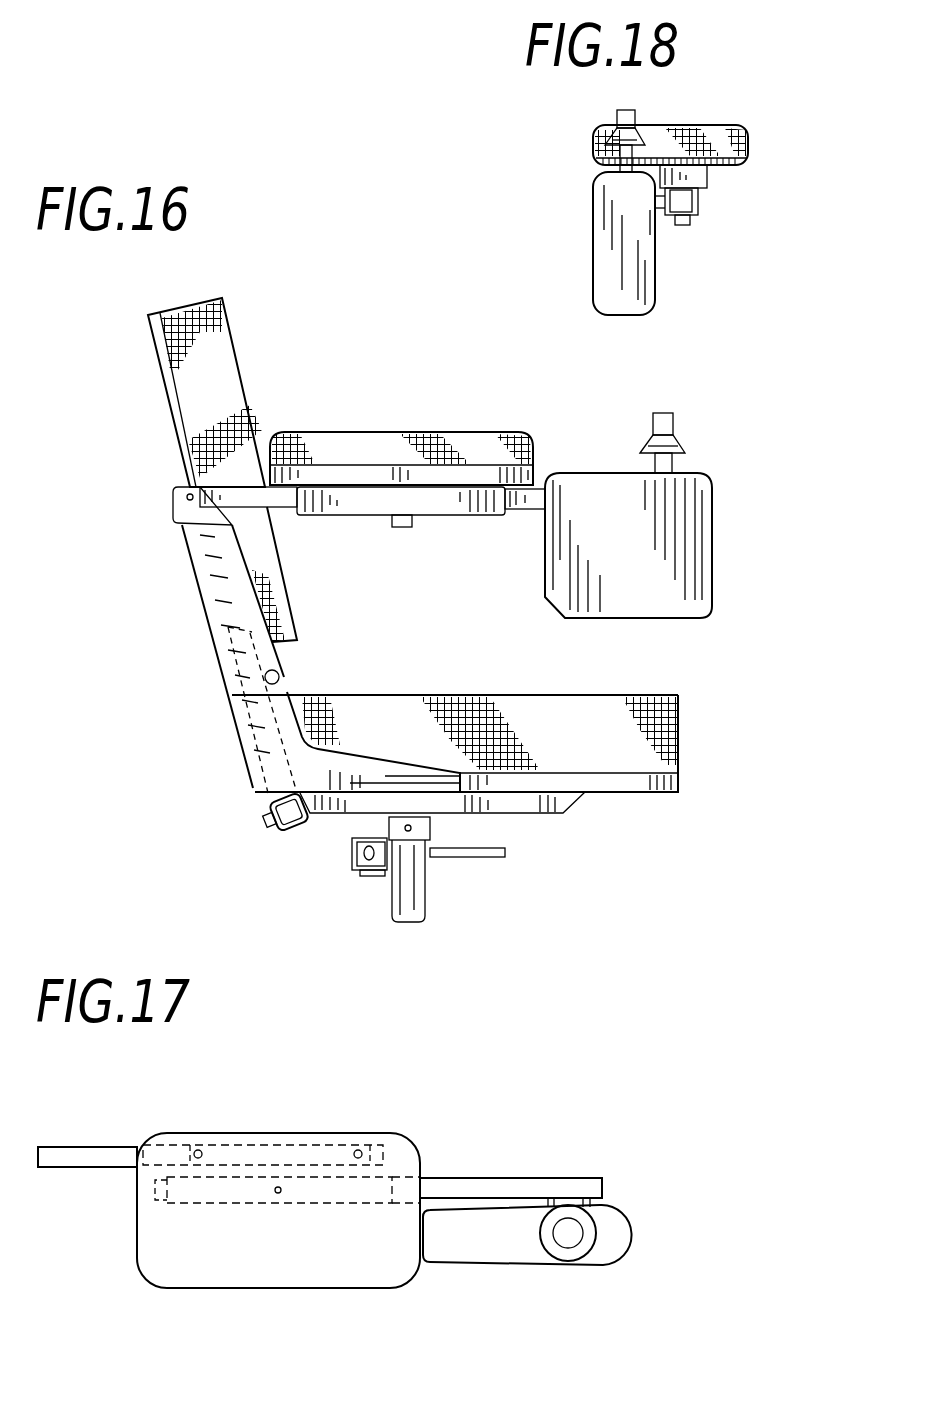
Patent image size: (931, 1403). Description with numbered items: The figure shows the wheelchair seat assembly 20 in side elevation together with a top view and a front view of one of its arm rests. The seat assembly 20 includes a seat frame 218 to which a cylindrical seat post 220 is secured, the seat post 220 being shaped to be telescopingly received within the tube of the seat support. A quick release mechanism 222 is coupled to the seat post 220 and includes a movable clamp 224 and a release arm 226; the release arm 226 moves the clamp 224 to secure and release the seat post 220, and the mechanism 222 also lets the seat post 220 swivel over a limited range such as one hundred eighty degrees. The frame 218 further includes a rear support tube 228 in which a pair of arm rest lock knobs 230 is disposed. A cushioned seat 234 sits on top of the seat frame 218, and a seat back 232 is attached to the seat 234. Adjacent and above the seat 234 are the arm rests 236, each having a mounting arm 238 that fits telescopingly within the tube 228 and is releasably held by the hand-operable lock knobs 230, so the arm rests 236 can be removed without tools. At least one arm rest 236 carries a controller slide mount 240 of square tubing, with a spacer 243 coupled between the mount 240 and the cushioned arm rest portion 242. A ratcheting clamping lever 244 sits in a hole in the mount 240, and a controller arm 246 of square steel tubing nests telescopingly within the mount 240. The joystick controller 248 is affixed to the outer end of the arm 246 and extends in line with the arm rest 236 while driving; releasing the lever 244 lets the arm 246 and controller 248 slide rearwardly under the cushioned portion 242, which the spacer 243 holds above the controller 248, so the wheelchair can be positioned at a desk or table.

In FIG. 16, the seat assembly 20 is at (138, 370).
In FIG. 16, the seat frame 218 is at (570, 824).
In FIG. 16, the seat post 220 is at (425, 905).
In FIG. 16, the quick release mechanism 222 is at (426, 889).
In FIG. 16, the movable clamp 224 is at (385, 876).
In FIG. 16, the release arm 226 is at (505, 855).
In FIG. 16, the rear support tube 228 is at (268, 810).
In FIG. 16, the arm rest lock knobs 230 is at (229, 835).
In FIG. 16, the seat back 232 is at (185, 445).
In FIG. 16, the cushioned seat 234 is at (616, 695).
In FIG. 16, the arm rests 236 is at (371, 420).
In FIG. 17, the arm rests 236 is at (410, 1090).
In FIG. 16, the mounting arm 238 is at (240, 742).
In FIG. 18, the controller slide mount 240 is at (698, 208).
In FIG. 17, the controller slide mount 240 is at (175, 1205).
In FIG. 18, the cushioned arm rest portion 242 is at (740, 128).
In FIG. 16, the cushioned arm rest portion 242 is at (437, 430).
In FIG. 17, the cushioned arm rest portion 242 is at (218, 1262).
In FIG. 18, the spacer 243 is at (706, 179).
In FIG. 16, the spacer 243 is at (538, 480).
In FIG. 18, the ratcheting clamping lever 244 is at (690, 225).
In FIG. 16, the ratcheting clamping lever 244 is at (402, 529).
In FIG. 16, the controller arm 246 is at (525, 512).
In FIG. 17, the controller arm 246 is at (545, 1178).
In FIG. 18, the controller 248 is at (655, 283).
In FIG. 16, the controller 248 is at (712, 540).
In FIG. 17, the controller 248 is at (633, 1238).